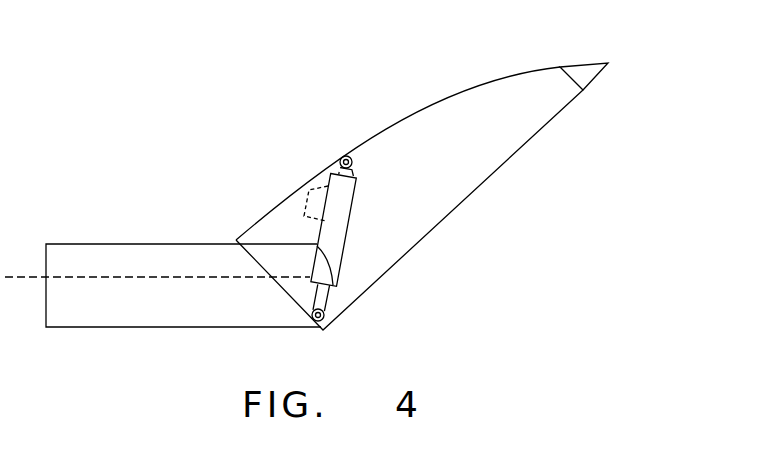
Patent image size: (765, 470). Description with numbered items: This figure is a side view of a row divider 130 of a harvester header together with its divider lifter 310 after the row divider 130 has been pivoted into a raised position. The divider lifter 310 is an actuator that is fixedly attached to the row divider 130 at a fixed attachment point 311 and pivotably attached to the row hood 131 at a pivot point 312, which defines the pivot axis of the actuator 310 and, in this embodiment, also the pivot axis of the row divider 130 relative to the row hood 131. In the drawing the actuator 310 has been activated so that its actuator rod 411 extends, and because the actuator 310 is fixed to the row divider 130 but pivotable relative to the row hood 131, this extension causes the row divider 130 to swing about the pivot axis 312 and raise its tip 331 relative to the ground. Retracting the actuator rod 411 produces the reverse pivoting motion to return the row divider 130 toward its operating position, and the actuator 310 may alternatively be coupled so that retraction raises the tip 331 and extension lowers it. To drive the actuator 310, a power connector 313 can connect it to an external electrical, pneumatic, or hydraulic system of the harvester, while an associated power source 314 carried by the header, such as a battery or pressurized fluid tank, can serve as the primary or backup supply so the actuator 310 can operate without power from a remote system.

The row divider 130 is at (515, 150).
The row hood 131 is at (97, 244).
The divider lifter 310 is at (352, 240).
The fixed attachment point 311 is at (346, 156).
The pivot point 312 is at (328, 332).
The power connector 313 is at (212, 278).
The associated power source 314 is at (303, 212).
The tip 331 is at (578, 63).
The actuator rod 411 is at (325, 312).